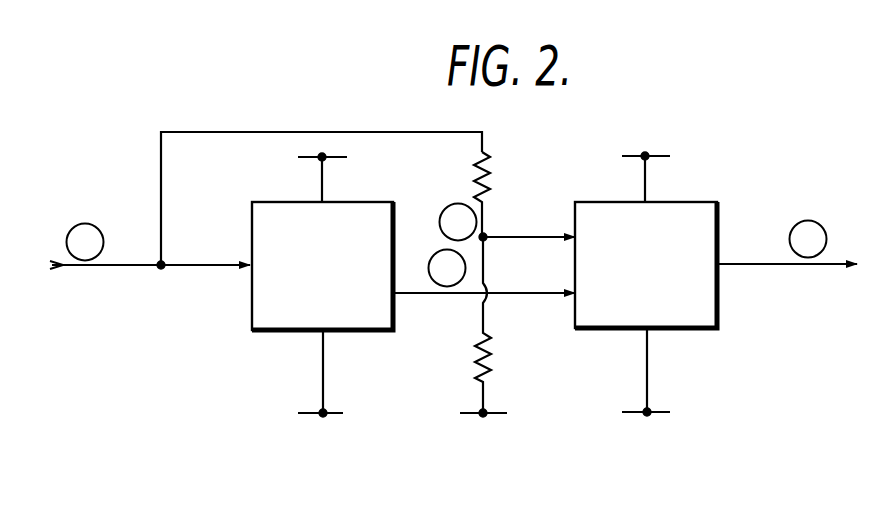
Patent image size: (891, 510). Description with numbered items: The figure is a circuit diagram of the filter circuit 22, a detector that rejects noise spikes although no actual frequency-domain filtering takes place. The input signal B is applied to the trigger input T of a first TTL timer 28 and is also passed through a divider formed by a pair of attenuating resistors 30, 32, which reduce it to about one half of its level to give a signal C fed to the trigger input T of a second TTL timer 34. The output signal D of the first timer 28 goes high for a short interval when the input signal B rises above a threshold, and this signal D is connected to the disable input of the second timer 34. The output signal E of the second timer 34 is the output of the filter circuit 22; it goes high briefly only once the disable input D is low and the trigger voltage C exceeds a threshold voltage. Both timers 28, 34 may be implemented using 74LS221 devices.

The filter circuit 22 is at (752, 135).
The first TTL timer 28 is at (253, 330).
The attenuating resistor 30 is at (492, 176).
The attenuating resistor 32 is at (488, 355).
The second TTL timer 34 is at (718, 318).